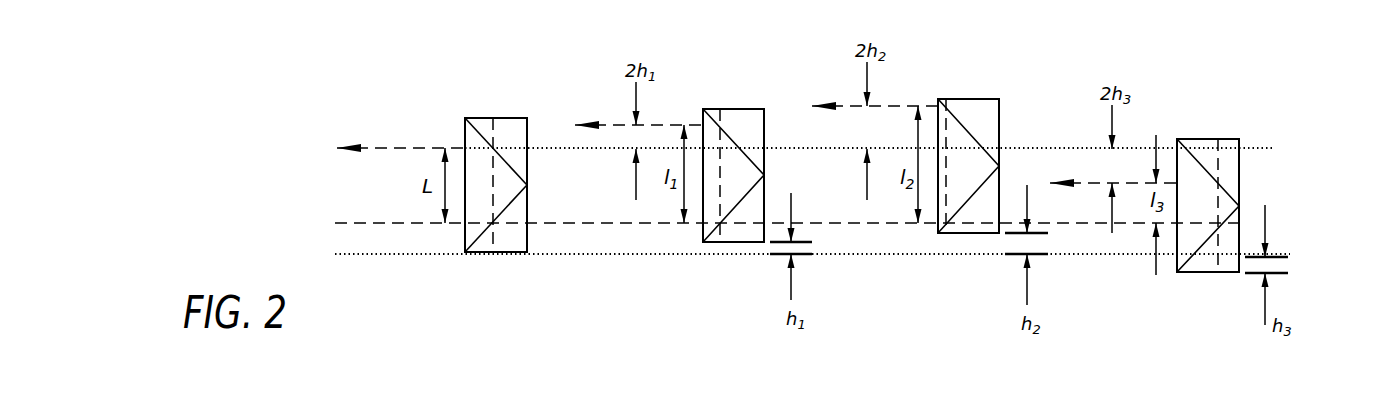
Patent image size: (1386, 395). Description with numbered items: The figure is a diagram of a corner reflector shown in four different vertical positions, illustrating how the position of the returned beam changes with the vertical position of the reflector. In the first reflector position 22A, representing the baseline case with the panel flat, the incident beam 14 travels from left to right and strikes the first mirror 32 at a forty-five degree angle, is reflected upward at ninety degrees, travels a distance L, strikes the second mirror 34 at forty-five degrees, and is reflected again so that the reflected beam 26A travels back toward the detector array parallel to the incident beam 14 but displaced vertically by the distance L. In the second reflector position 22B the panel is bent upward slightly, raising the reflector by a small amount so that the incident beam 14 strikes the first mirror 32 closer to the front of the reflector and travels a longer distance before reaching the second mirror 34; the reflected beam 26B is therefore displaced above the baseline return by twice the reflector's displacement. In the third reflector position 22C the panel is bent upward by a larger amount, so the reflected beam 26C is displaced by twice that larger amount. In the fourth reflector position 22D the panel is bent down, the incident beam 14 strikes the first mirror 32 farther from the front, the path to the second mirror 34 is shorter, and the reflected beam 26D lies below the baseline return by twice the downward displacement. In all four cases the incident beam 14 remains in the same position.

The incident beam 14 is at (370, 223).
The first reflector position 22A is at (457, 157).
The second reflector position 22B is at (707, 88).
The third reflector position 22C is at (940, 72).
The fourth reflector position 22D is at (1183, 110).
The reflected beam 26A is at (383, 147).
The reflected beam 26B is at (611, 124).
The reflected beam 26C is at (856, 105).
The reflected beam 26D is at (1098, 183).
The first mirror 32 is at (481, 238).
The second mirror 34 is at (483, 138).